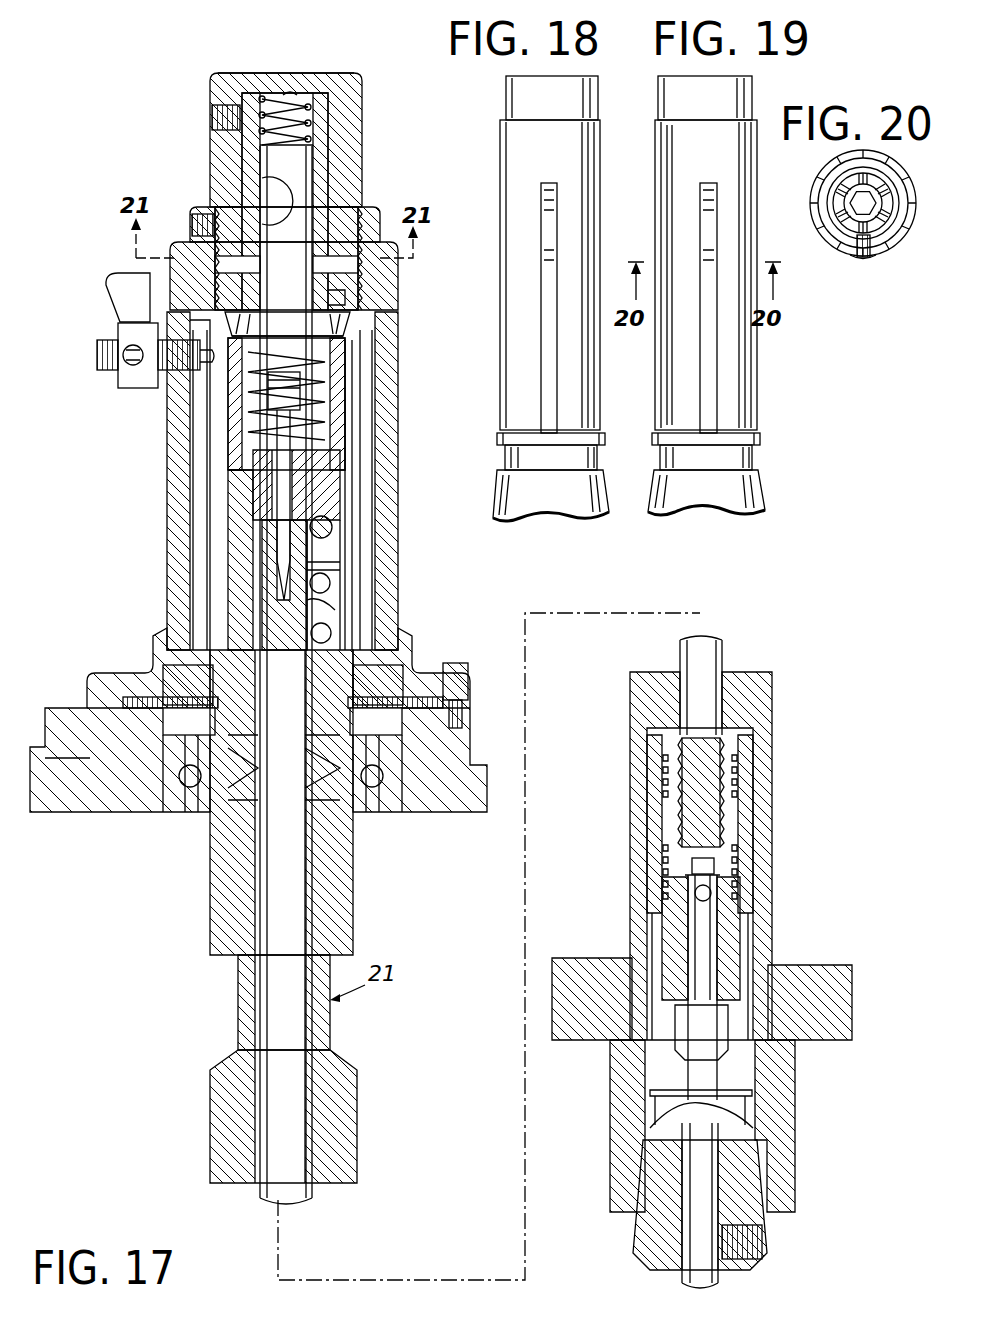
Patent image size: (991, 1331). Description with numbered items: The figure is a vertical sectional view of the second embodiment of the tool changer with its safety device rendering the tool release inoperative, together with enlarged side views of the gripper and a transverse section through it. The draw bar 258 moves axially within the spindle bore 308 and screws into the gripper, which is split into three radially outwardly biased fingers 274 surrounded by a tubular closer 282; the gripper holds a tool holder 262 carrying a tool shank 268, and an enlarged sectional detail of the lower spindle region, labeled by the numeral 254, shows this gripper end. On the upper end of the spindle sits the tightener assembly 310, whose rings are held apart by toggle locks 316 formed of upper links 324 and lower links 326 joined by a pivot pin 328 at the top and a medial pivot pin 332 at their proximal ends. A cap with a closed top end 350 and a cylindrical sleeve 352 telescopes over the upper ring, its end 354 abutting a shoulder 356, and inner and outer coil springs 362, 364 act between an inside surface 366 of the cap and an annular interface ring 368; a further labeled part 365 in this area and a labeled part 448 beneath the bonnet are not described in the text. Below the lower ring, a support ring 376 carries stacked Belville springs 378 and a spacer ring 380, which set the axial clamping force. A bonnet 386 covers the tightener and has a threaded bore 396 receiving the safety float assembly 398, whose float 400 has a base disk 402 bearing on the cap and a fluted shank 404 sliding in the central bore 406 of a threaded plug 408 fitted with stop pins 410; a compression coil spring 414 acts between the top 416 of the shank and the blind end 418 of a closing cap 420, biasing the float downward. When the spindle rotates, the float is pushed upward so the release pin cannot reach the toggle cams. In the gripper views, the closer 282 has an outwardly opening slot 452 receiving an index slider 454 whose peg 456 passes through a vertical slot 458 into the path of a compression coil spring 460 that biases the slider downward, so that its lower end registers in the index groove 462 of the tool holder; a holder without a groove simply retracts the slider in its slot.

In FIG. 17, the mounting block 254 is at (552, 997).
In FIG. 17, the draw bar 258 is at (308, 1070).
In FIG. 17, the tool holder 262 is at (636, 1231).
In FIG. 18, the tool holder 262 is at (611, 513).
In FIG. 19, the tool holder 262 is at (762, 492).
In FIG. 17, the tool shank 268 is at (682, 1284).
In FIG. 20, the fingers 274 is at (872, 186).
In FIG. 19, the tubular closer 282 is at (760, 212).
In FIG. 20, the tubular closer 282 is at (905, 262).
In FIG. 17, the spindle bore 308 is at (302, 1018).
In FIG. 17, the tightener assembly 310 is at (344, 556).
In FIG. 17, the toggle locks 316 is at (333, 580).
In FIG. 17, the upper links 324 is at (332, 564).
In FIG. 17, the lower links 326 is at (330, 634).
In FIG. 17, the pivot pin 328 is at (332, 525).
In FIG. 17, the medial pivot pin 332 is at (322, 604).
In FIG. 17, the top end 350 is at (345, 336).
In FIG. 17, the cylindrical sleeve 352 is at (345, 432).
In FIG. 17, the end 354 is at (342, 482).
In FIG. 17, the shoulder 356 is at (342, 500).
In FIG. 17, the inner coil spring 362 is at (302, 388).
In FIG. 17, the outer coil spring 364 is at (340, 396).
In FIG. 17, the cylinder wall 365 is at (236, 402).
In FIG. 17, the inside surface 366 is at (345, 347).
In FIG. 17, the annular interface ring 368 is at (342, 456).
In FIG. 17, the support ring 376 is at (332, 855).
In FIG. 17, the Belville springs 378 is at (328, 778).
In FIG. 17, the spacer ring 380 is at (410, 798).
In FIG. 17, the bonnet 386 is at (400, 269).
In FIG. 17, the threaded bore 396 is at (350, 222).
In FIG. 17, the safety float assembly 398 is at (362, 99).
In FIG. 17, the float 400 is at (332, 298).
In FIG. 17, the base disk 402 is at (245, 295).
In FIG. 17, the fluted shank 404 is at (305, 168).
In FIG. 17, the central bore 406 is at (315, 122).
In FIG. 17, the threaded plug 408 is at (360, 240).
In FIG. 17, the stop pins 410 is at (412, 239).
In FIG. 17, the compression coil spring 414 is at (270, 96).
In FIG. 17, the top 416 is at (306, 128).
In FIG. 17, the blind end 418 is at (300, 94).
In FIG. 17, the closing cap 420 is at (352, 74).
In FIG. 17, the washer 448 is at (352, 318).
In FIG. 18, the slot 452 is at (552, 234).
In FIG. 19, the slot 452 is at (712, 234).
In FIG. 20, the slot 452 is at (866, 258).
In FIG. 18, the index slider 454 is at (548, 368).
In FIG. 19, the index slider 454 is at (708, 368).
In FIG. 20, the index slider 454 is at (856, 262).
In FIG. 17, the peg 456 is at (742, 902).
In FIG. 18, the peg 456 is at (548, 455).
In FIG. 19, the peg 456 is at (712, 438).
In FIG. 17, the vertical slot 458 is at (745, 955).
In FIG. 17, the compression coil spring 460 is at (658, 860).
In FIG. 18, the index groove 462 is at (552, 442).